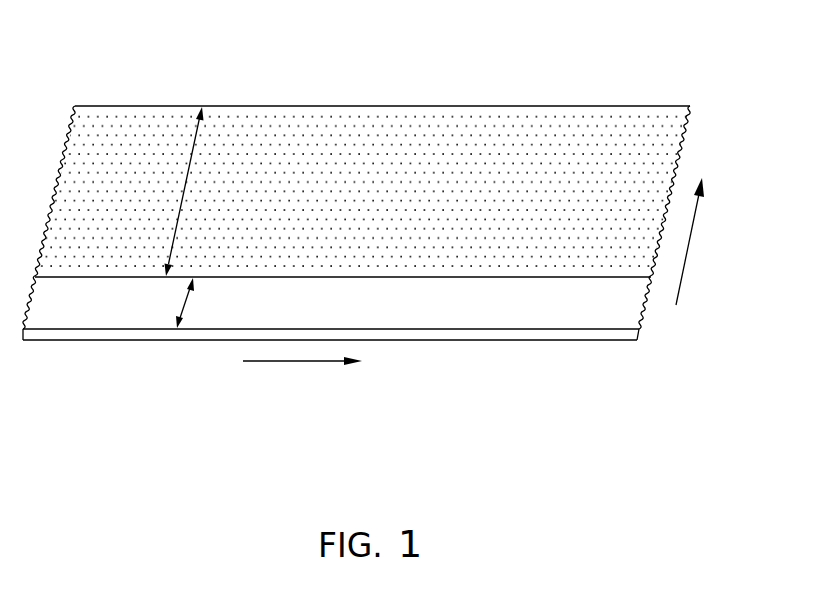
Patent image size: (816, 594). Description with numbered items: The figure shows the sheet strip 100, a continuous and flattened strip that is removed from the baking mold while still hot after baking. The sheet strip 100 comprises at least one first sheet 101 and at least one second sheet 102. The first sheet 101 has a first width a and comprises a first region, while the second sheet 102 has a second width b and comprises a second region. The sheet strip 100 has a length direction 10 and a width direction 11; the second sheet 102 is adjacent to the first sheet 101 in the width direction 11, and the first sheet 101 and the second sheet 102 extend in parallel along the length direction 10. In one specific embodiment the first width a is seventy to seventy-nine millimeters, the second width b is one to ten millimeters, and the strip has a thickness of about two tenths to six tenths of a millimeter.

The sheet strip 100 is at (389, 32).
The first sheet 101 is at (397, 120).
The second sheet 102 is at (463, 308).
The length direction 10 is at (298, 362).
The width direction 11 is at (688, 244).
The first width a is at (184, 191).
The second width b is at (184, 303).